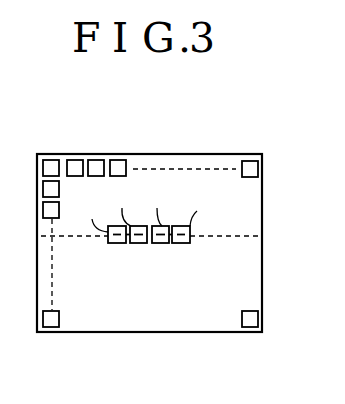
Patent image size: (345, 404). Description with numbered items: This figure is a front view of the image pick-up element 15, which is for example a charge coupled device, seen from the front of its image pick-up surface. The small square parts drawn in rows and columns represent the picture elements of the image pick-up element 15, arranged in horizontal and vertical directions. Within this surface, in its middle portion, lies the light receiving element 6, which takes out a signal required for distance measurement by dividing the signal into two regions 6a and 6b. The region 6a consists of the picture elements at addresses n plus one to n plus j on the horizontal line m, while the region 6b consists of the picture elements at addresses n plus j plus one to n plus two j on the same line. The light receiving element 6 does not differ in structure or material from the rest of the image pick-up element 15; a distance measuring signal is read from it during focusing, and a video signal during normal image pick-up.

The image pick-up element 15 is at (155, 203).
The light receiving element 6 is at (150, 275).
The region 6a is at (148, 248).
The region 6b is at (172, 255).